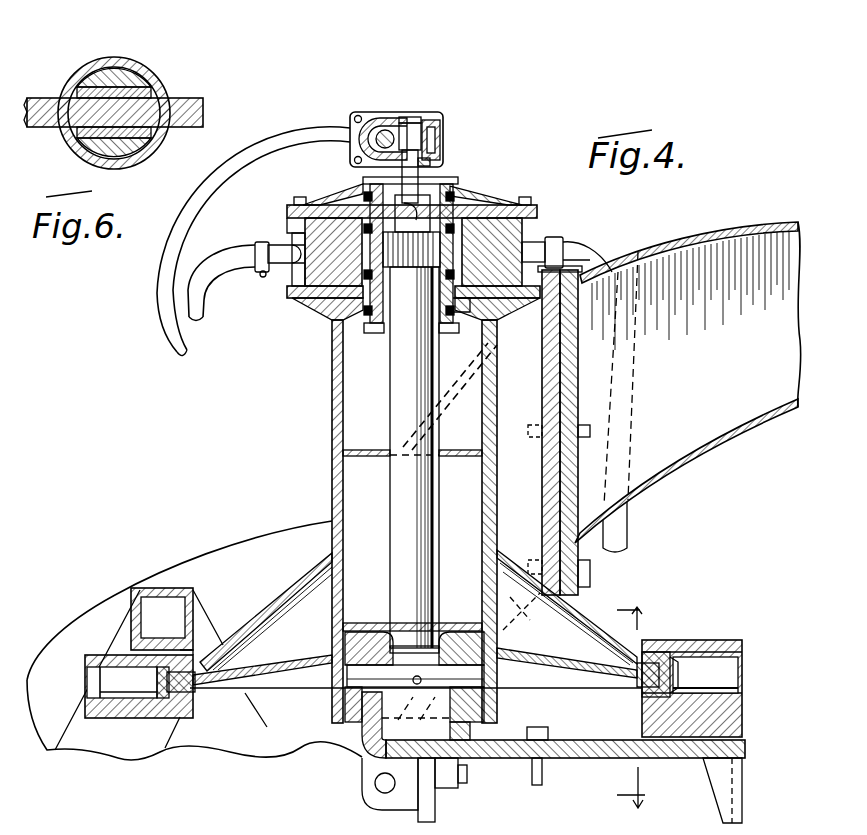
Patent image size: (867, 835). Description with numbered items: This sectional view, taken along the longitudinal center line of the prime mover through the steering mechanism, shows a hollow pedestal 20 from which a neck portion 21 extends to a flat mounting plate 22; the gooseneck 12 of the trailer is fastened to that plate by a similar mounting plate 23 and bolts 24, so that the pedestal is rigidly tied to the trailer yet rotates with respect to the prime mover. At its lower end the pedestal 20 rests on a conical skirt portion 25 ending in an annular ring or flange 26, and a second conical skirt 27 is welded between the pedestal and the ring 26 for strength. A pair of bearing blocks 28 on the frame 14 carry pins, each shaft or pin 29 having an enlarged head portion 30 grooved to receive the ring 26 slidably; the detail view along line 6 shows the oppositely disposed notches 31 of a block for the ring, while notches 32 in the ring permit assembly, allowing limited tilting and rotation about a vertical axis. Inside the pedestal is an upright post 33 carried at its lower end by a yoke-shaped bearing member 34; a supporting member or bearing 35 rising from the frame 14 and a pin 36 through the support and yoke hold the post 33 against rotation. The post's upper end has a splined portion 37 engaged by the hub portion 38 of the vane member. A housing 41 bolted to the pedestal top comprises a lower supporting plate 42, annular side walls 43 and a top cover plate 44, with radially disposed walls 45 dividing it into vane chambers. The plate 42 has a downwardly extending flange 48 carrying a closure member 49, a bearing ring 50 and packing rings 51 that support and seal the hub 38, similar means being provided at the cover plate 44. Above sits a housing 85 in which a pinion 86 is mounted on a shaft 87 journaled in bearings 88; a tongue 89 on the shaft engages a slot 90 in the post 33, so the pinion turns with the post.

In FIG. 4, the section line 6— 6 is at (631, 707).
In FIG. 4, the gooseneck 12 is at (690, 232).
In FIG. 4, the frame 14 is at (588, 760).
In FIG. 4, the hollow pedestal 20 is at (332, 405).
In FIG. 4, the neck portion 21 is at (528, 616).
In FIG. 4, the flat mounting plate 22 is at (498, 380).
In FIG. 4, the mounting plate 23 is at (578, 358).
In FIG. 4, the bolts 24 is at (596, 420).
In FIG. 4, the conical skirt portion 25 is at (290, 590).
In FIG. 6, the annular ring or flange 26 is at (205, 102).
In FIG. 4, the annular ring or flange 26 is at (192, 695).
In FIG. 4, the second conical skirt 27 is at (302, 680).
In FIG. 6, the bearing blocks 28 is at (80, 72).
In FIG. 4, the bearing blocks 28 is at (112, 690).
In FIG. 4, the shaft or pin 29 is at (145, 705).
In FIG. 6, the enlarged head portion 30 is at (145, 60).
In FIG. 4, the enlarged head portion 30 is at (178, 710).
In FIG. 6, the notches 31 is at (166, 82).
In FIG. 4, the notches 32 is at (380, 796).
In FIG. 4, the upright shaft or post 33 is at (400, 483).
In FIG. 4, the yoke-shaped bearing member 34 is at (368, 630).
In FIG. 4, the supporting member or bearing 35 is at (382, 710).
In FIG. 4, the pin 36 is at (445, 650).
In FIG. 4, the splined portion 37 is at (482, 197).
In FIG. 4, the hub portion 38 is at (505, 205).
In FIG. 4, the housing 41 is at (547, 228).
In FIG. 4, the lower supporting plate 42 is at (316, 312).
In FIG. 4, the annular side walls 43 is at (293, 223).
In FIG. 4, the top cover plate 44 is at (336, 203).
In FIG. 4, the radially disposed walls 45 is at (272, 281).
In FIG. 4, the downwardly extending flange 48 is at (370, 333).
In FIG. 4, the closure member 49 is at (380, 340).
In FIG. 4, the bearing ring 50 is at (450, 333).
In FIG. 4, the packing rings 51 is at (464, 313).
In FIG. 4, the housing 85 is at (443, 132).
In FIG. 4, the pinion 86 is at (433, 118).
In FIG. 4, the shaft 87 is at (420, 184).
In FIG. 4, the bearings 88 is at (420, 114).
In FIG. 4, the tongue 89 is at (432, 206).
In FIG. 4, the slot 90 is at (412, 214).